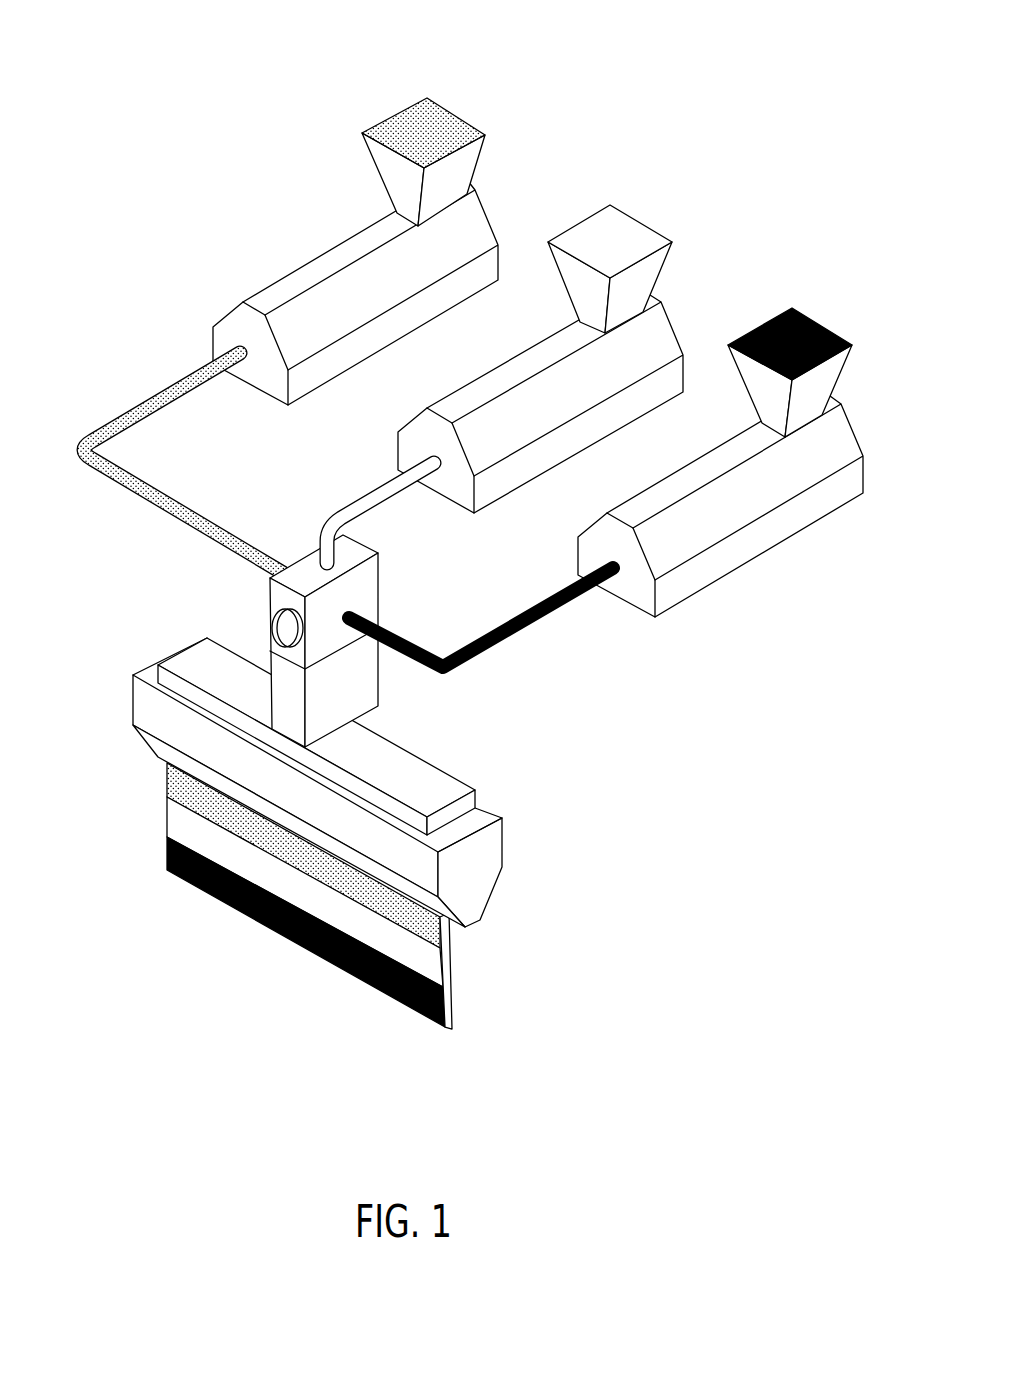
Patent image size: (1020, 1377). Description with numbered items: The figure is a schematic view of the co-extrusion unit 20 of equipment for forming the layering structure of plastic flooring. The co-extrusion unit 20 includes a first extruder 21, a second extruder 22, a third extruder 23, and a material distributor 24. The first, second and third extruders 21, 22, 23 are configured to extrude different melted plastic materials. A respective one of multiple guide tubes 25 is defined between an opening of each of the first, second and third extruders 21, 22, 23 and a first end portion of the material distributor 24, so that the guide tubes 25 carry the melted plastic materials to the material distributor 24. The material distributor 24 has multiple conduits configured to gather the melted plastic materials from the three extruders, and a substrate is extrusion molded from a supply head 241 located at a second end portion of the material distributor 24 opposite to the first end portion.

The co-extrusion unit 20 is at (627, 93).
The first extruder 21 is at (357, 250).
The second extruder 22 is at (653, 327).
The third extruder 23 is at (750, 538).
The material distributor 24 is at (362, 690).
The supply head 241 is at (478, 883).
The guide tube 25 is at (117, 491).